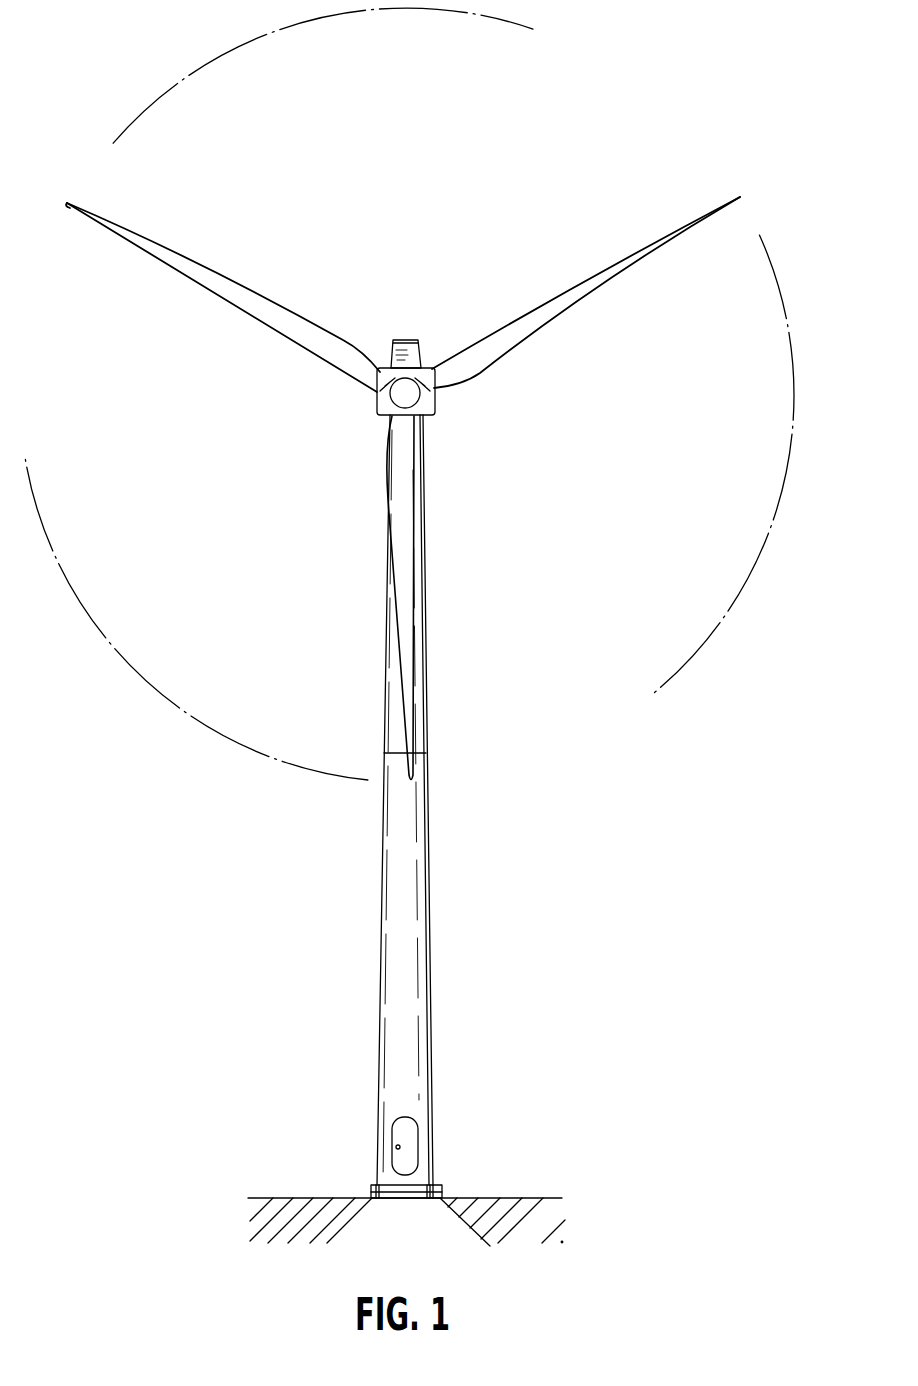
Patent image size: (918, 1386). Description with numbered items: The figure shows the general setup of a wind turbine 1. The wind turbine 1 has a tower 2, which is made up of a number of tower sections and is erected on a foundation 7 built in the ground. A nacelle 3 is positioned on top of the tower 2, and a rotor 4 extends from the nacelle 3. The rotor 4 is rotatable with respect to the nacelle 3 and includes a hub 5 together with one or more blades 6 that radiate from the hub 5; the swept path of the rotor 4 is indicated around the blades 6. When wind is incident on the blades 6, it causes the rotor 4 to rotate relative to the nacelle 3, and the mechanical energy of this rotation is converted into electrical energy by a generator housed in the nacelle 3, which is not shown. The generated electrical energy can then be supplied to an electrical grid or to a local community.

The wind turbine 1 is at (147, 886).
The tower 2 is at (420, 1040).
The nacelle 3 is at (427, 407).
The rotor 4 is at (704, 647).
The hub 5 is at (403, 397).
The blades 6 is at (560, 307).
The foundation 7 is at (385, 1218).